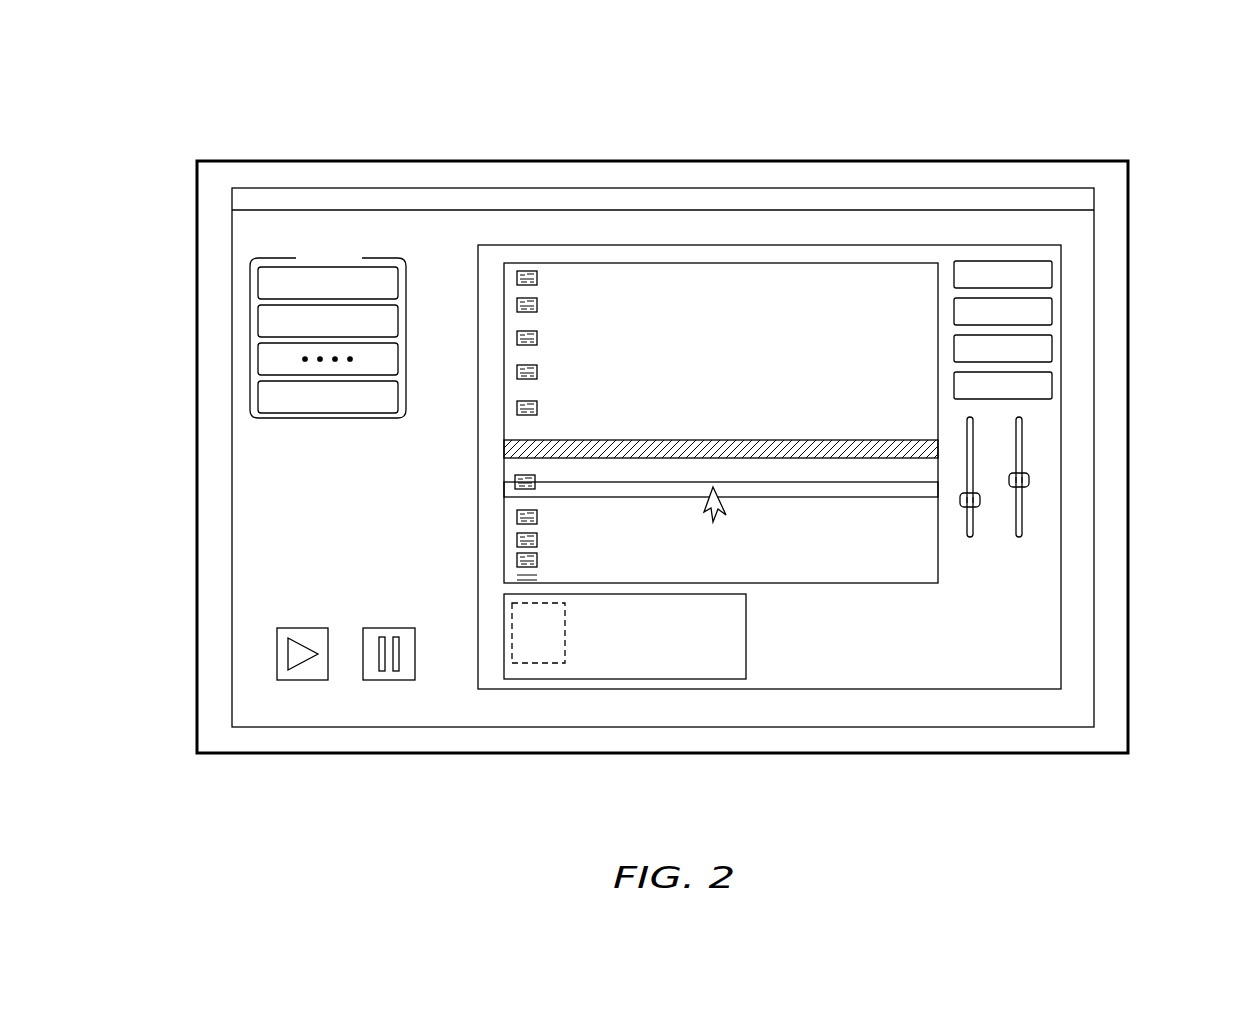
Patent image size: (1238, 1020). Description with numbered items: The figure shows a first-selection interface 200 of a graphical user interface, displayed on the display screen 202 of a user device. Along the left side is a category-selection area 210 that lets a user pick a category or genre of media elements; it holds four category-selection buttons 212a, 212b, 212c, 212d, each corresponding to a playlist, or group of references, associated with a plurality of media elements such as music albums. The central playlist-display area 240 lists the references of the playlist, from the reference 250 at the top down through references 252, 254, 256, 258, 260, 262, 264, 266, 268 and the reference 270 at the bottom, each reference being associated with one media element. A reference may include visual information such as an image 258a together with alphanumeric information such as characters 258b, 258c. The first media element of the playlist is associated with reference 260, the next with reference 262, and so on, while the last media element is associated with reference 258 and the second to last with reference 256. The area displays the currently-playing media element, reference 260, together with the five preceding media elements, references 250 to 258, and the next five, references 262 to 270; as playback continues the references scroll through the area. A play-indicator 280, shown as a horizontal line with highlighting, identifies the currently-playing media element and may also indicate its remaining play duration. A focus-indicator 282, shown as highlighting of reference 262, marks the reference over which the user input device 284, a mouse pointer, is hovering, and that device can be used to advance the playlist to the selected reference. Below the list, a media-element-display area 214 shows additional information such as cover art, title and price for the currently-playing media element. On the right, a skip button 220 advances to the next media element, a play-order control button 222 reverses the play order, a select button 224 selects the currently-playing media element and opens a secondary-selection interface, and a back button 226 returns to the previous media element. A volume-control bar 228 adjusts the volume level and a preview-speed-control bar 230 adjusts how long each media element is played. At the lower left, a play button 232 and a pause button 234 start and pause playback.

The first-selection interface 200 is at (968, 130).
The display screen 202 is at (718, 160).
The category-selection area 210 is at (381, 255).
The category-selection button 212a is at (257, 283).
The category-selection button 212b is at (258, 320).
The category-selection button 212c is at (258, 357).
The category-selection button 212d is at (258, 395).
The media-element-display area 214 is at (532, 680).
The skip button 220 is at (1053, 274).
The play-order control button 222 is at (1053, 312).
The select button 224 is at (1053, 349).
The back button 226 is at (1053, 386).
The volume-control bar 228 is at (975, 528).
The preview-speed-control bar 230 is at (1024, 455).
The play button 232 is at (275, 656).
The pause button 234 is at (391, 682).
The playlist-display area 240 is at (548, 263).
The reference 250 is at (510, 278).
The reference 252 is at (510, 306).
The reference 254 is at (510, 338).
The reference 256 is at (510, 372).
The reference 258 is at (661, 393).
The image 258a is at (538, 404).
The characters 258b is at (702, 407).
The characters 258c is at (848, 413).
The reference 260 is at (508, 452).
The reference 262 is at (508, 484).
The reference 264 is at (510, 518).
The reference 266 is at (510, 541).
The reference 268 is at (510, 562).
The reference 270 is at (510, 578).
The play-indicator 280 is at (922, 440).
The focus-indicator 282 is at (876, 497).
The user input device 284 is at (720, 518).